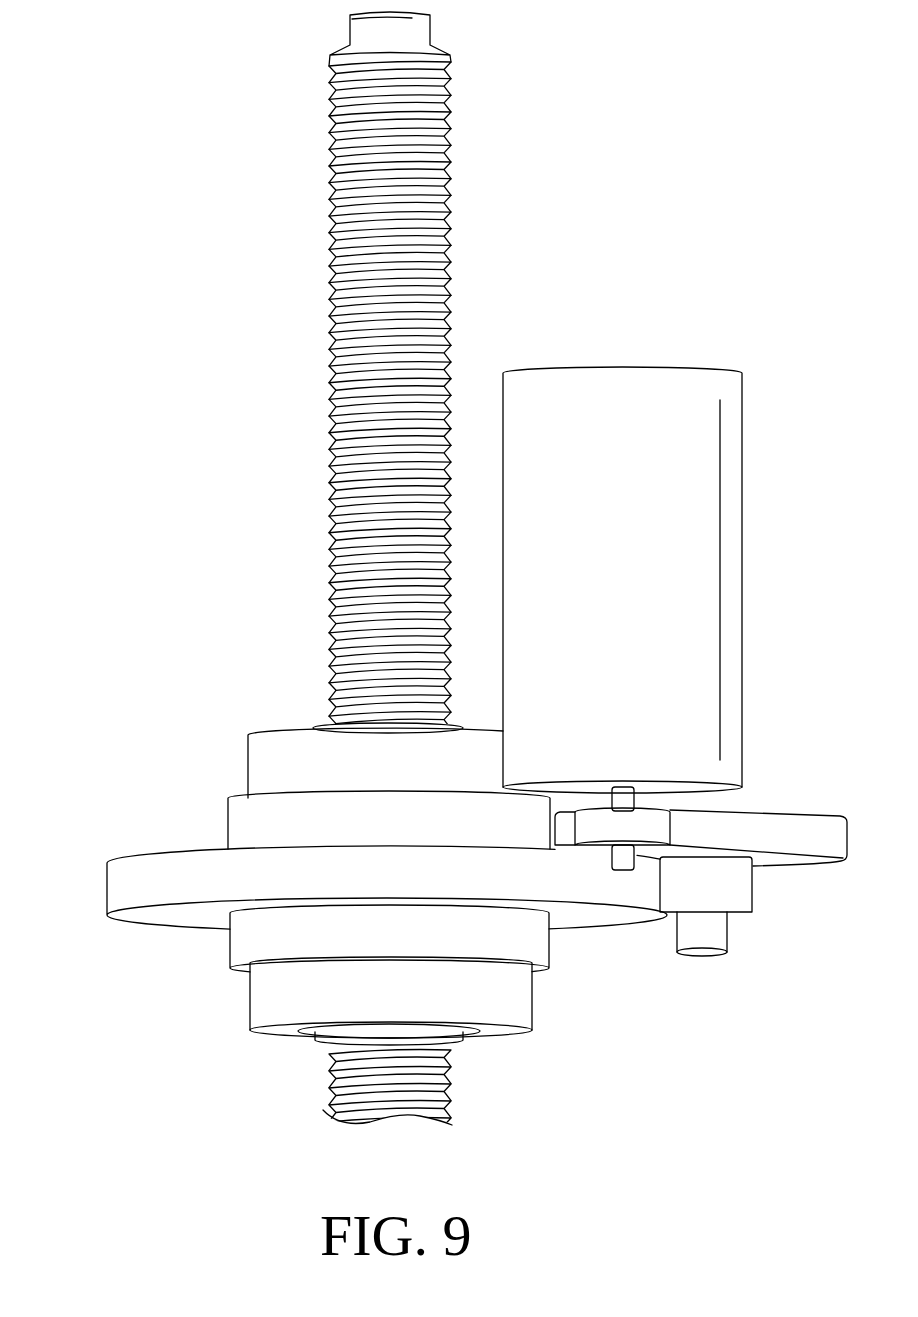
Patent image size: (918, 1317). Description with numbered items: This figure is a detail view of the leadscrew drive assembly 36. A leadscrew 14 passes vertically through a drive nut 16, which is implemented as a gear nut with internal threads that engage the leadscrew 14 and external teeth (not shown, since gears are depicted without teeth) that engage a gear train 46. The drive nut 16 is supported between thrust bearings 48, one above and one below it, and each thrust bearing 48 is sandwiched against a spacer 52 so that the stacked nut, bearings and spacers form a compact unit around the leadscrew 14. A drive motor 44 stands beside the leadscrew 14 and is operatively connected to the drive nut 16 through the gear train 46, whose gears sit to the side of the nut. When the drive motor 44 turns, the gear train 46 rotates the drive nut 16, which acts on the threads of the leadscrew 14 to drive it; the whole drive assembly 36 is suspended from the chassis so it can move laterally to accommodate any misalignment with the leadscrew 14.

The leadscrew 14 is at (420, 232).
The drive motor 44 is at (673, 387).
The spacer 52 is at (267, 758).
The thrust bearing 48 is at (245, 820).
The drive nut 16 is at (122, 885).
The drive assembly 36 is at (344, 903).
The gear train 46 is at (790, 932).